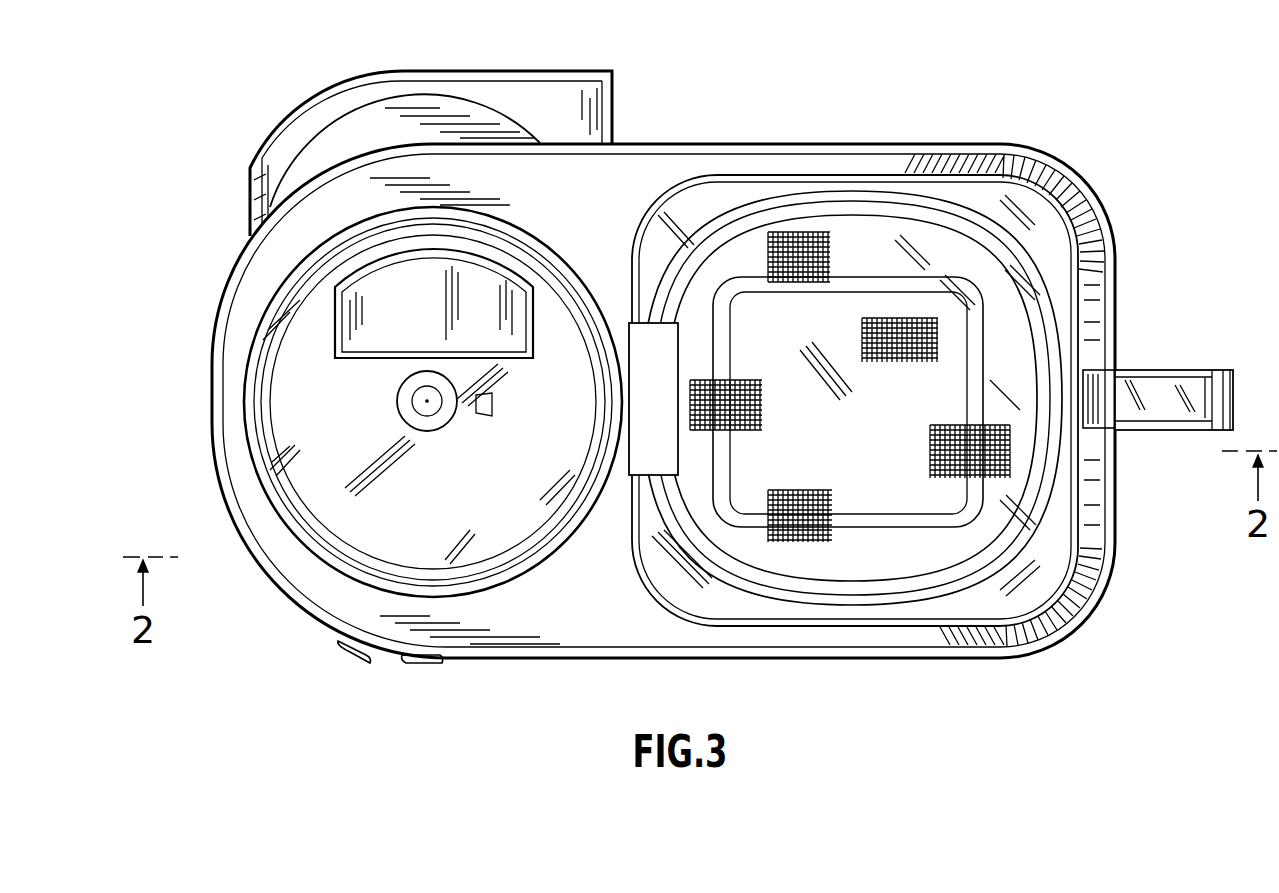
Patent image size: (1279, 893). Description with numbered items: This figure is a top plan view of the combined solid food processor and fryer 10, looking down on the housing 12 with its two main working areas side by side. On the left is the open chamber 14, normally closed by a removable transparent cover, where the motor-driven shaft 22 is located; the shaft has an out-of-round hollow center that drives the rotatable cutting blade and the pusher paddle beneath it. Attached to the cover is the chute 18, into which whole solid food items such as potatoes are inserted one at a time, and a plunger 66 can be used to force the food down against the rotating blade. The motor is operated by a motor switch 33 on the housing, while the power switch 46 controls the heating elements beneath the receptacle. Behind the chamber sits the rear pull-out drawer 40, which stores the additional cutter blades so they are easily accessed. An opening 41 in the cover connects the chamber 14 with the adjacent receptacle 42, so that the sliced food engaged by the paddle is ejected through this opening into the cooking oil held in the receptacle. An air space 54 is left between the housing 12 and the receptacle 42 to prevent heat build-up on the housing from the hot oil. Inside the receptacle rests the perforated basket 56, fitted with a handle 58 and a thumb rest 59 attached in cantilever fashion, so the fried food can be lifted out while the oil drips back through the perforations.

The solid food processor and fryer 10 is at (1015, 83).
The housing 12 is at (213, 358).
The open chamber 14 is at (546, 546).
The chute 18 is at (512, 362).
The shaft 22 is at (397, 401).
The motor switch 33 is at (432, 660).
The rear pull-out drawer 40 is at (524, 70).
The opening 41 is at (643, 421).
The receptacle 42 is at (1042, 561).
The power switch 46 is at (352, 652).
The air space 54 is at (1090, 485).
The perforated basket 56 is at (753, 213).
The handle 58 is at (1198, 368).
The thumb rest 59 is at (1083, 396).
The plunger 66 is at (446, 327).